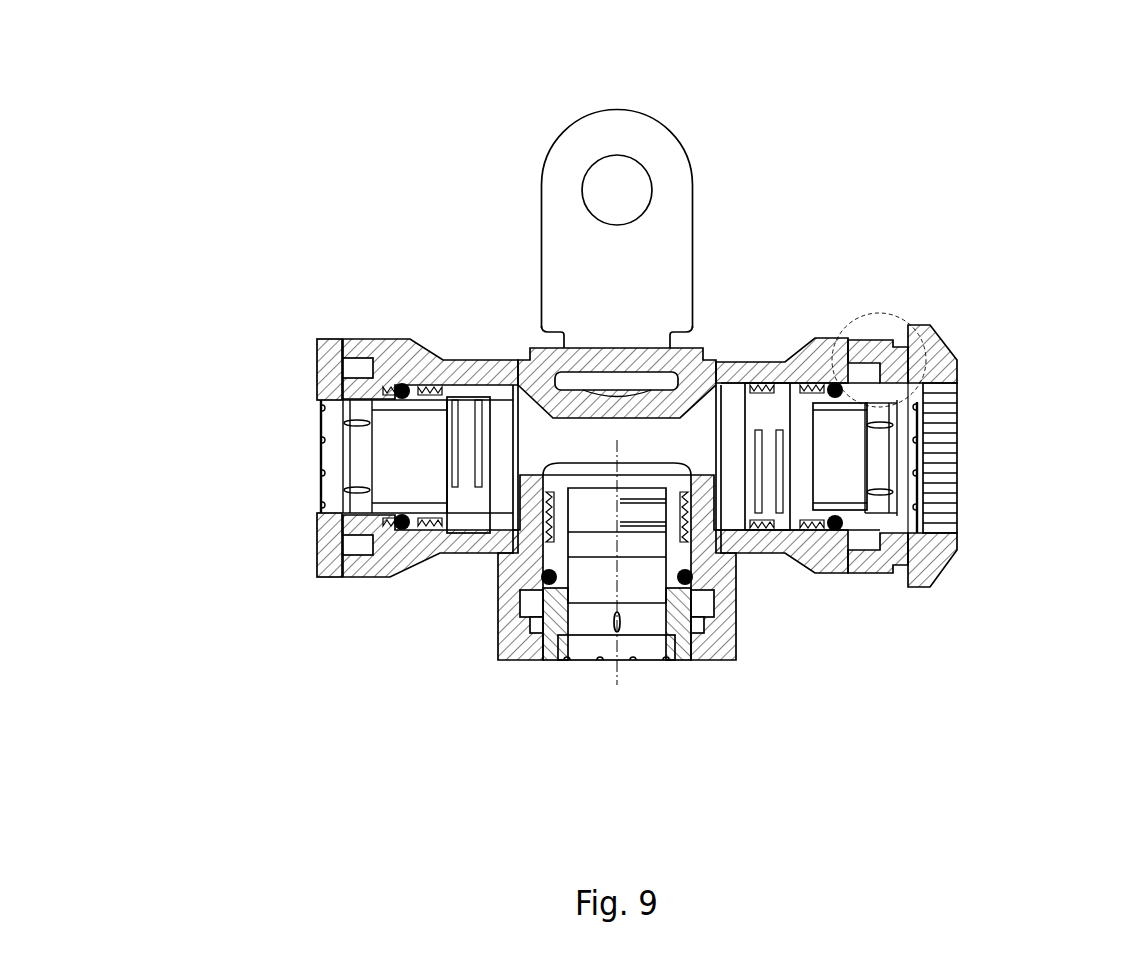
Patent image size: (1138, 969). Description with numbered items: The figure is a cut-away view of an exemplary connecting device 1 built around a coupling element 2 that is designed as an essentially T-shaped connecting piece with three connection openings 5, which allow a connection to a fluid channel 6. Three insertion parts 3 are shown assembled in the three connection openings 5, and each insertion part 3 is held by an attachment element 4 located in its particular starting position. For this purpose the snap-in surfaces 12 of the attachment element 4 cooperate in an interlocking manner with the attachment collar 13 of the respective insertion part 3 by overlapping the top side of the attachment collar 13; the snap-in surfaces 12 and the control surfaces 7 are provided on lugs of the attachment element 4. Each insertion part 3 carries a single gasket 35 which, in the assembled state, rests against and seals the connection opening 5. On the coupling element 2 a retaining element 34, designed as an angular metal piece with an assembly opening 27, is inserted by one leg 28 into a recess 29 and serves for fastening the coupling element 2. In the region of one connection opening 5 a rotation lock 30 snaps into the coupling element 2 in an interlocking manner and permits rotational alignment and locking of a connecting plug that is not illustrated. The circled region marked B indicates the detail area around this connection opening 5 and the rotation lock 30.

The connecting device 1 is at (932, 245).
The coupling element 2 is at (735, 362).
The insertion part 3 is at (800, 403).
The attachment element 4 is at (360, 566).
The connection opening 5 is at (410, 390).
The fluid channel 6 is at (568, 447).
The control surface 7 is at (355, 542).
The snap-in surface 12 is at (336, 369).
The attachment collar 13 is at (369, 376).
The assembly opening 27 is at (628, 185).
The leg 28 is at (643, 387).
The recess 29 is at (559, 387).
The rotation lock 30 is at (948, 543).
The retaining element 34 is at (568, 232).
The gasket 35 is at (401, 537).
The detail B is at (930, 325).